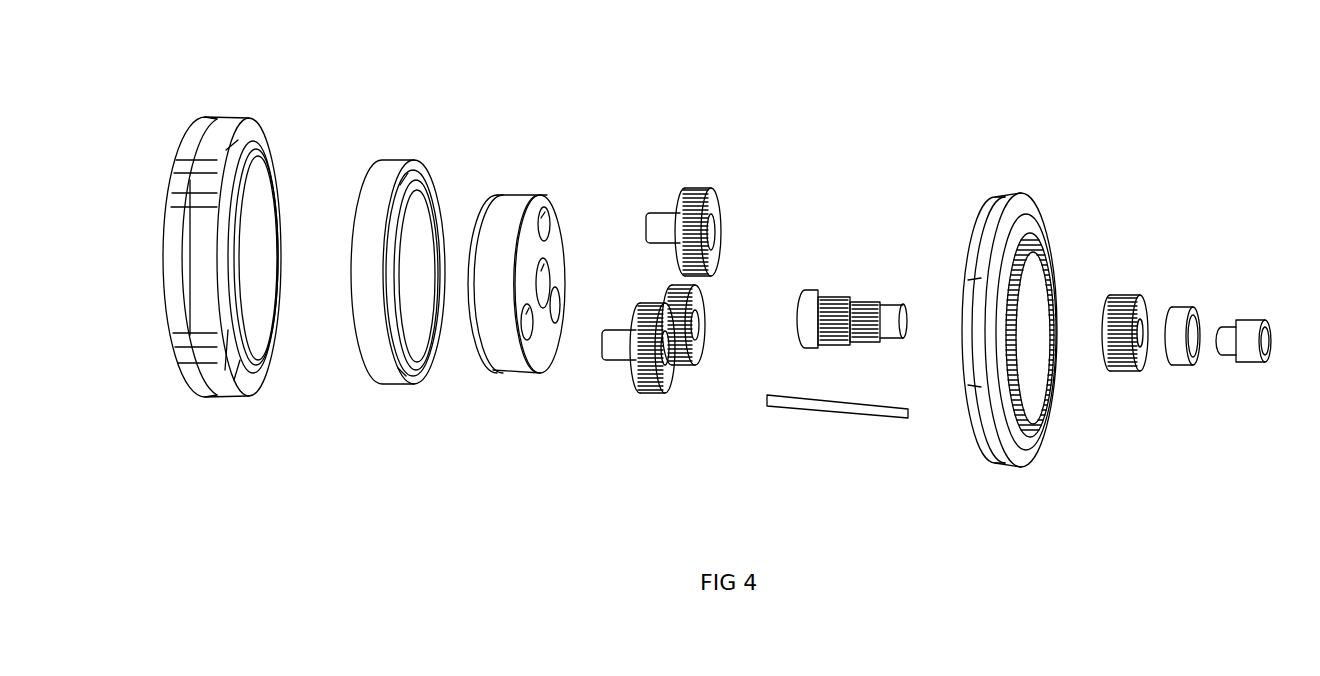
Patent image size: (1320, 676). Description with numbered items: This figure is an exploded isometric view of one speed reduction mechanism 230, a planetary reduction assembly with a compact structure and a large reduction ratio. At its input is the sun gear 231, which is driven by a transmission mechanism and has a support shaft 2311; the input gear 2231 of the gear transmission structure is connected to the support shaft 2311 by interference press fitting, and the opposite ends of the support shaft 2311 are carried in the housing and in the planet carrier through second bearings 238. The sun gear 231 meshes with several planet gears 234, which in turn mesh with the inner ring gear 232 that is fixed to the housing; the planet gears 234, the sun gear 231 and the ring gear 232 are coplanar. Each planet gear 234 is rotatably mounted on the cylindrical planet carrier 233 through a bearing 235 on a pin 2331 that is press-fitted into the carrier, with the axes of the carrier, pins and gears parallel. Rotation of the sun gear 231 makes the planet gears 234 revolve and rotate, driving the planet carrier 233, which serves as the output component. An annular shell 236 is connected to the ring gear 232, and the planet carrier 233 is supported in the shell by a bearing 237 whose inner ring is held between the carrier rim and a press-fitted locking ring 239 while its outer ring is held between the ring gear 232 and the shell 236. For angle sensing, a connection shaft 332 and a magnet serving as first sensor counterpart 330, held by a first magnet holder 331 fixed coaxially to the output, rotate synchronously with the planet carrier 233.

The speed reduction mechanism 230 is at (786, 54).
The sun gear 231 is at (852, 271).
The support shaft 2311 is at (886, 318).
The inner ring gear 232 is at (1032, 450).
The planet carrier 233 is at (516, 303).
The pin 2331 is at (663, 228).
The planet gear 234 is at (728, 192).
The bearing 235 is at (718, 208).
The annular shell 236 is at (205, 375).
The bearing 237 is at (372, 340).
The second bearing 238 is at (805, 310).
The locking ring 239 is at (500, 196).
The input gear 2231 is at (1123, 293).
The first sensor counterpart 330 is at (1268, 330).
The first magnet holder 331 is at (1262, 363).
The connection shaft 332 is at (848, 412).